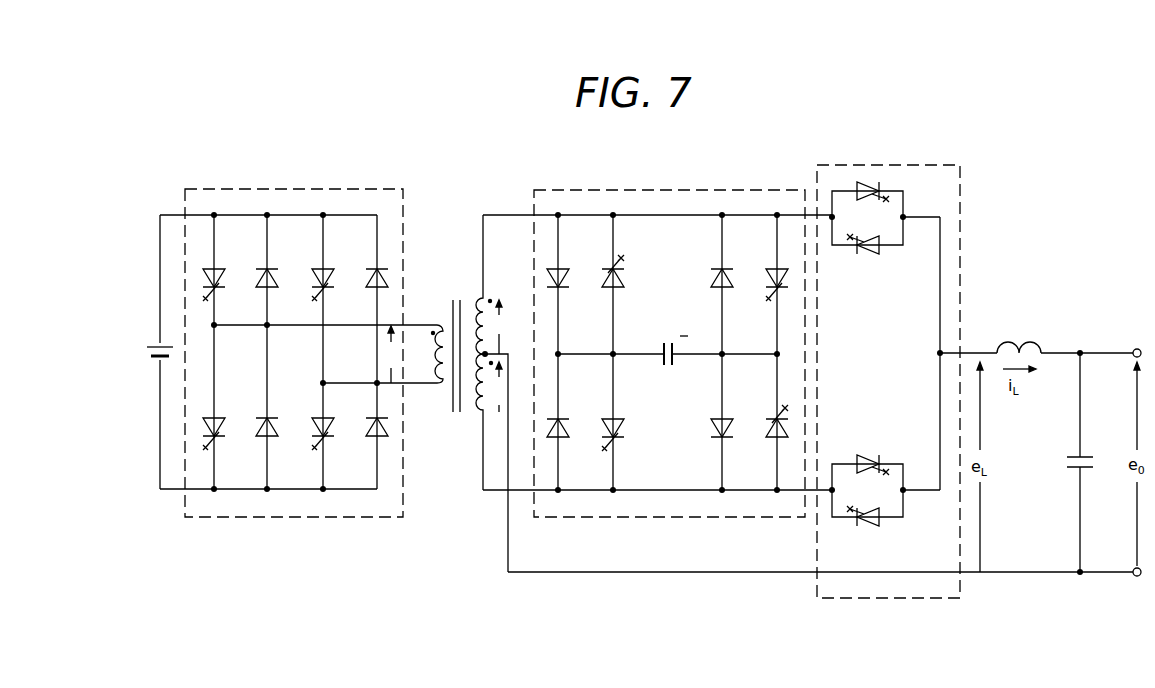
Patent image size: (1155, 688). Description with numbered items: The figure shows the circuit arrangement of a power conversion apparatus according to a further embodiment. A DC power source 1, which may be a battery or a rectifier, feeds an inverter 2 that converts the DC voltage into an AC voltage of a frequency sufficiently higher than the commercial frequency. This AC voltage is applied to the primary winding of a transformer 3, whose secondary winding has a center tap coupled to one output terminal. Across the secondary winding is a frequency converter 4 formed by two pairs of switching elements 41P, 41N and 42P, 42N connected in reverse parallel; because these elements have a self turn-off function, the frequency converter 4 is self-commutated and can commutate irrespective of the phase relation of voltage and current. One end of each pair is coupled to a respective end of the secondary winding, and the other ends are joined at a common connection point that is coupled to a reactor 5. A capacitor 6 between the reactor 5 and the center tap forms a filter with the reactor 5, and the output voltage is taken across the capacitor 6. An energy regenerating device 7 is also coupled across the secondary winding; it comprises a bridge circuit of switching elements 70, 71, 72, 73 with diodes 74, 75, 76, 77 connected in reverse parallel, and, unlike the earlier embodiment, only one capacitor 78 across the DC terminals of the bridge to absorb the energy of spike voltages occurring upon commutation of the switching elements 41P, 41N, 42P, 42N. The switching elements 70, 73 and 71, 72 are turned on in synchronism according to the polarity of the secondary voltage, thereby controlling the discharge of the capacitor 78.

The DC power source 1 is at (152, 345).
The inverter 2 is at (284, 178).
The transformer 3 is at (436, 268).
The frequency converter 4 is at (873, 150).
The reactor 5 is at (1022, 346).
The capacitor 6 is at (1068, 461).
The energy regenerating device 7 is at (661, 178).
The switching element 70 is at (619, 285).
The switching element 71 is at (620, 435).
The switching element 72 is at (770, 287).
The switching element 73 is at (770, 437).
The diode 74 is at (563, 285).
The diode 75 is at (564, 435).
The diode 76 is at (717, 285).
The diode 77 is at (717, 435).
The capacitor 78 is at (668, 367).
The switching element 41P is at (880, 184).
The switching element 41N is at (877, 253).
The switching element 42N is at (875, 455).
The switching element 42P is at (876, 526).